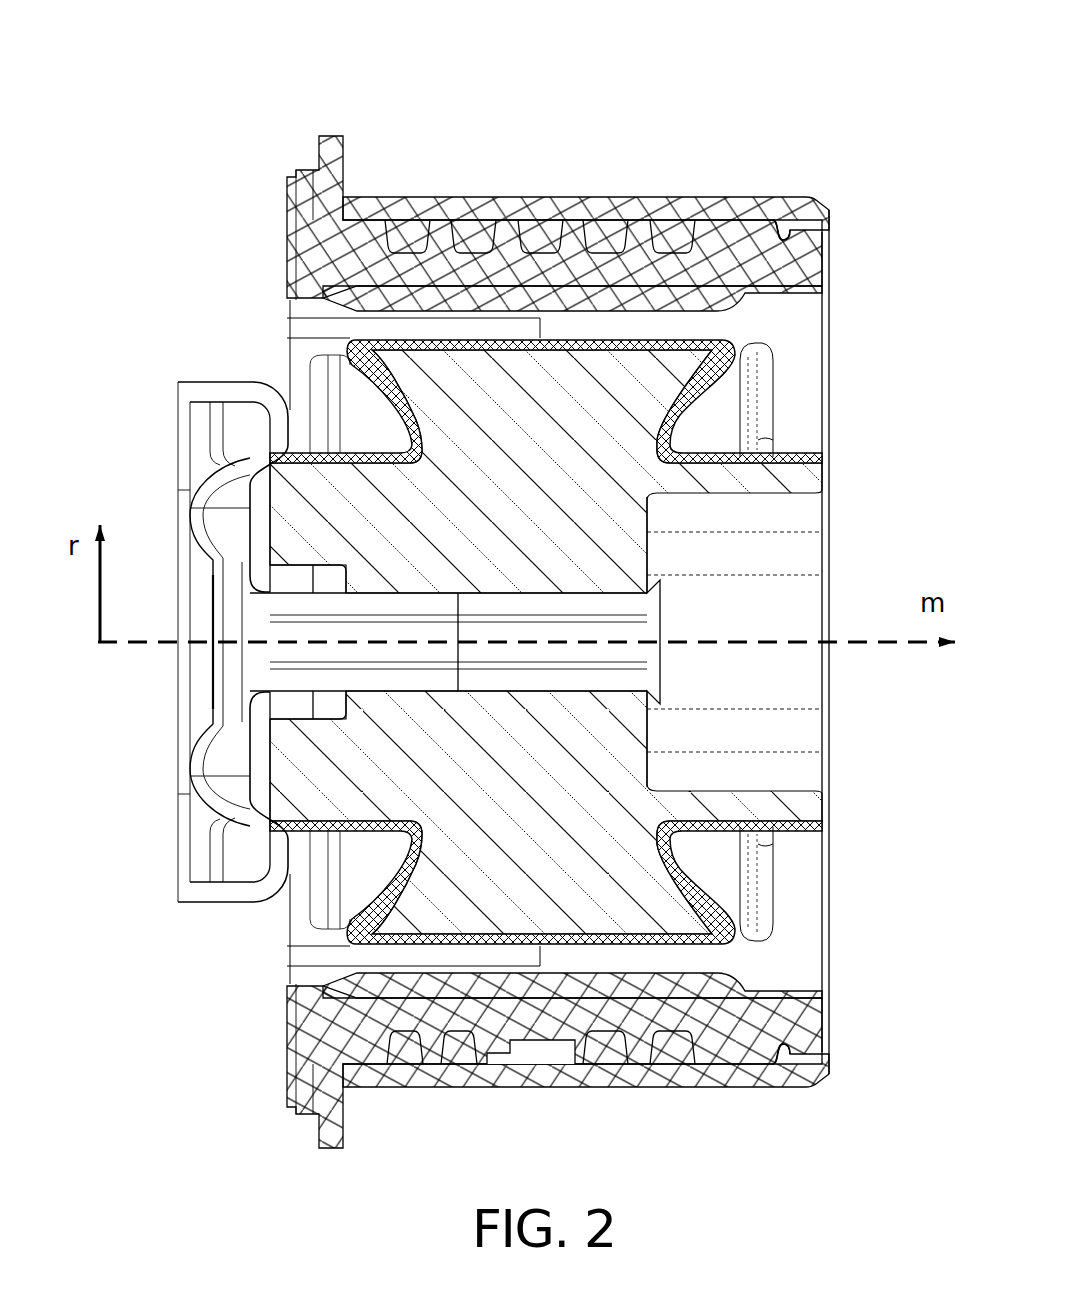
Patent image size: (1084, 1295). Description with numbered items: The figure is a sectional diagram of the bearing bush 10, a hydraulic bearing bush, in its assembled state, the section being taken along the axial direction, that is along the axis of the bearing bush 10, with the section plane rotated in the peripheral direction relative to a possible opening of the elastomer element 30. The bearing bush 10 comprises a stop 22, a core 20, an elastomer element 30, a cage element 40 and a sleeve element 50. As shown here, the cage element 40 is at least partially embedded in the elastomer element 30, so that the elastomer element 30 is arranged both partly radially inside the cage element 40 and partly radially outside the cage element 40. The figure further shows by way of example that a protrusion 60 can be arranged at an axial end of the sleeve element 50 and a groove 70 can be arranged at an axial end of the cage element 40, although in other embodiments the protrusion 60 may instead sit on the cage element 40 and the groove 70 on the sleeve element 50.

The bearing bush 10 is at (212, 42).
The core 20 is at (425, 378).
The stop 22 is at (240, 410).
The elastomer element 30 is at (473, 227).
The cage element 40 is at (322, 248).
The sleeve element 50 is at (565, 205).
The protrusion 60 is at (785, 230).
The groove 70 is at (795, 243).